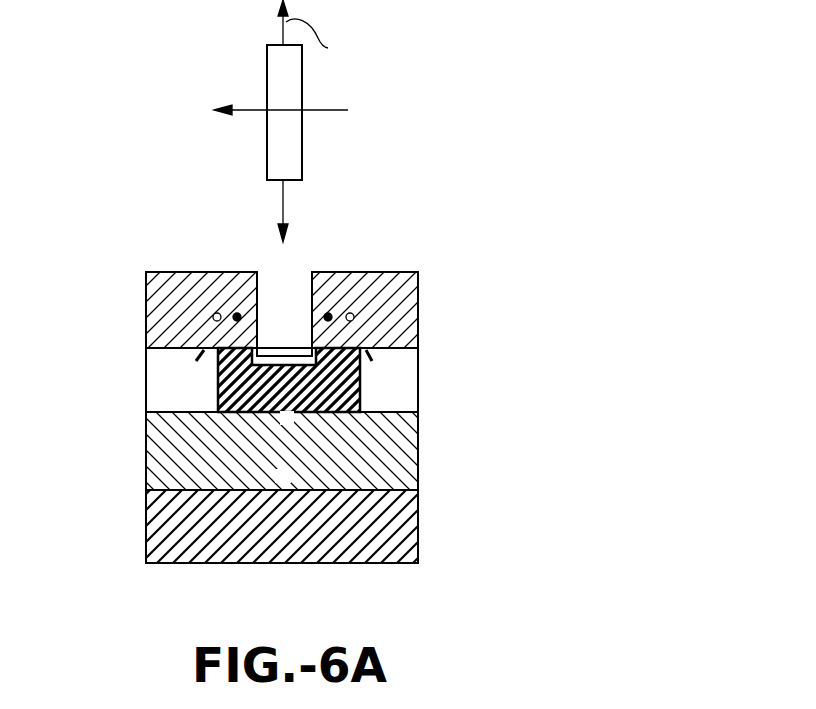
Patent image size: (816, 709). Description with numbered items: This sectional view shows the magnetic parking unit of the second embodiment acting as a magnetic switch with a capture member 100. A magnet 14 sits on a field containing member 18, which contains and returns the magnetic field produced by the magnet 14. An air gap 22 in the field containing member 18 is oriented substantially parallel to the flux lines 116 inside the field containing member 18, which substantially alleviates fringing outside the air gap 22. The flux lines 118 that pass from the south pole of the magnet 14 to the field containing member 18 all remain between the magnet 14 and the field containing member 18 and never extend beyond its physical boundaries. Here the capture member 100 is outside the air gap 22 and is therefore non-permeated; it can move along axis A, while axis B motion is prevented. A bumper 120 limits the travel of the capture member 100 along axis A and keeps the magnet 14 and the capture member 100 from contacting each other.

The capture member 100 is at (298, 152).
The air gap 22 is at (290, 296).
The magnetic flux lines 116 is at (219, 310).
The flux lines 118 is at (212, 377).
The bumper 120 is at (360, 408).
The magnet 14 is at (360, 443).
The field containing member 18 is at (412, 556).